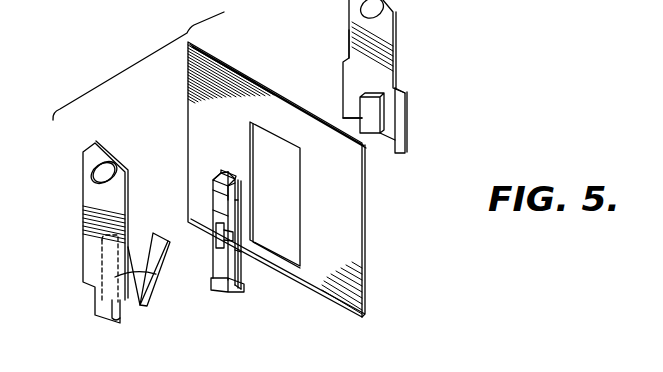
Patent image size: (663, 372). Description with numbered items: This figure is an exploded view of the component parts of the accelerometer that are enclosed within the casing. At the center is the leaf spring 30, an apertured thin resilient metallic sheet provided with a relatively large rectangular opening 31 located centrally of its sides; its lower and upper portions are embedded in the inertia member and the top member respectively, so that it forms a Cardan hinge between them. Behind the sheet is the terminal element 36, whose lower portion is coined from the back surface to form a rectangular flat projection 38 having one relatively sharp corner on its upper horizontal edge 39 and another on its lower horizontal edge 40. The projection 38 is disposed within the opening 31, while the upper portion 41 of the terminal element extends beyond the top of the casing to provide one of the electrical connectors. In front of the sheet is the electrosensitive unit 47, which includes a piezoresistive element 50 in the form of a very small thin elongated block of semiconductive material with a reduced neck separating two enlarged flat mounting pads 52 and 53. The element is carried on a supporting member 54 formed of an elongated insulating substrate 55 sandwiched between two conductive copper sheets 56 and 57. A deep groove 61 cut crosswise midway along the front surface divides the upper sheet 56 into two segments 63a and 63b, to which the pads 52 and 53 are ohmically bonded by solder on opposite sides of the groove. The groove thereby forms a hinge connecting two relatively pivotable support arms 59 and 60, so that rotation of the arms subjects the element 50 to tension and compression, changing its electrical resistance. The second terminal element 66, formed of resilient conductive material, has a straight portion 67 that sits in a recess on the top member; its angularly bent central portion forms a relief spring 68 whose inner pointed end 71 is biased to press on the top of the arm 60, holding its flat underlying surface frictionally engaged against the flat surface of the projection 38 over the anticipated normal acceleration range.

The leaf spring 30 is at (352, 240).
The opening 31 is at (300, 190).
The terminal element 36 is at (398, 65).
The projection 38 is at (368, 117).
The upper horizontal edge 39 is at (395, 88).
The lower horizontal edge 40 is at (372, 131).
The upper portion 41 is at (357, 35).
The electrosensitive unit 47 is at (209, 277).
The piezoresistive element 50 is at (203, 219).
The mounting pad 52 is at (220, 234).
The mounting pad 53 is at (226, 234).
The supporting member 54 is at (228, 154).
The substrate 55 is at (216, 183).
The sheet of conductive material 56 is at (230, 176).
The sheet of conductive material 57 is at (232, 190).
The support arm 59 is at (237, 278).
The support arm 60 is at (218, 197).
The groove 61 is at (233, 237).
The metal segment 63a is at (238, 262).
The metal segment 63b is at (213, 213).
The terminal element 66 is at (75, 256).
The straight portion 67 is at (90, 190).
The relief spring 68 is at (147, 300).
The inner pointed end 71 is at (167, 240).